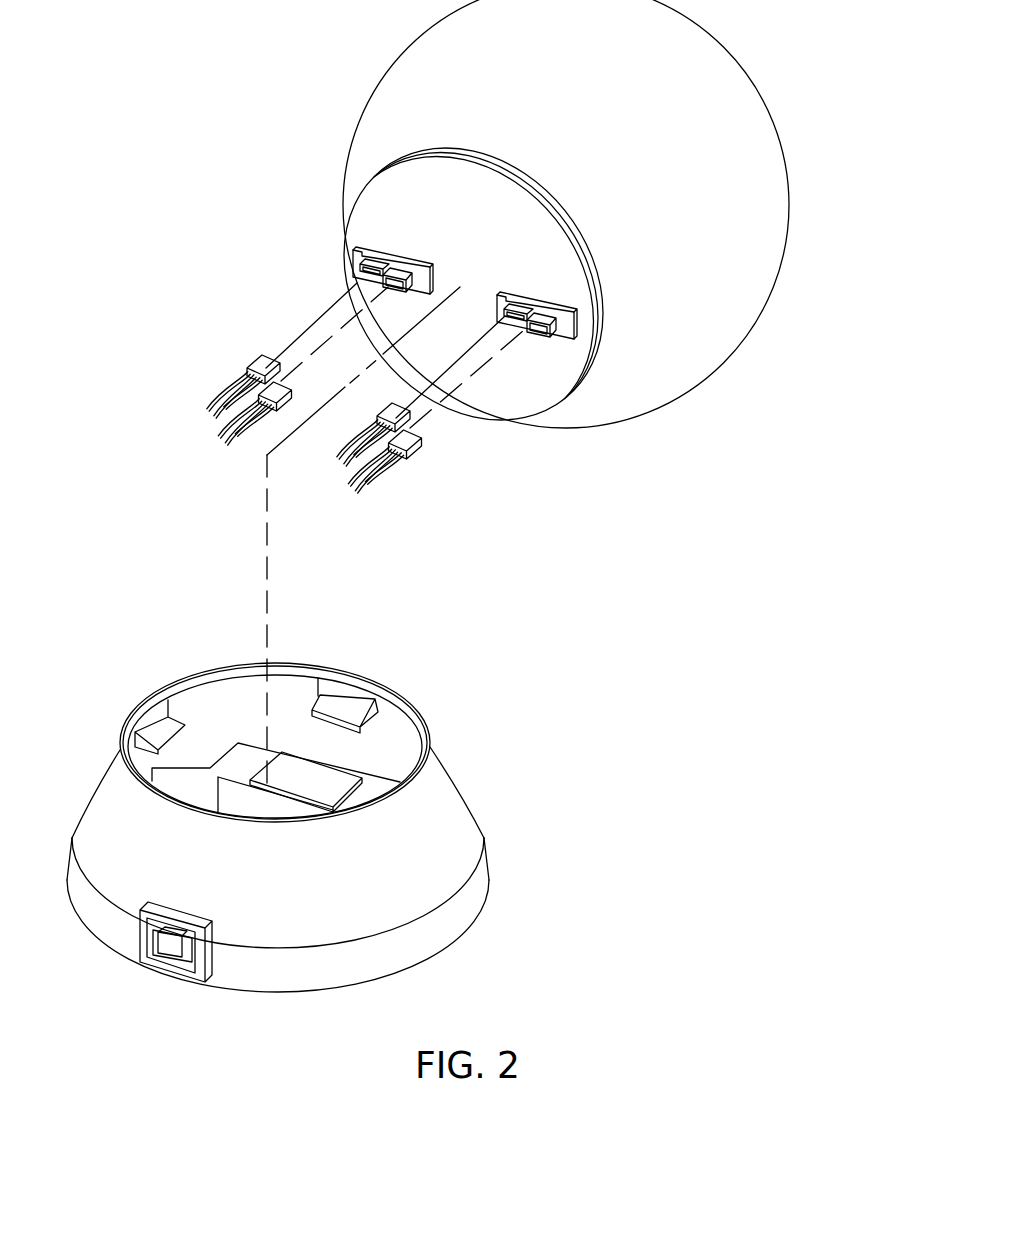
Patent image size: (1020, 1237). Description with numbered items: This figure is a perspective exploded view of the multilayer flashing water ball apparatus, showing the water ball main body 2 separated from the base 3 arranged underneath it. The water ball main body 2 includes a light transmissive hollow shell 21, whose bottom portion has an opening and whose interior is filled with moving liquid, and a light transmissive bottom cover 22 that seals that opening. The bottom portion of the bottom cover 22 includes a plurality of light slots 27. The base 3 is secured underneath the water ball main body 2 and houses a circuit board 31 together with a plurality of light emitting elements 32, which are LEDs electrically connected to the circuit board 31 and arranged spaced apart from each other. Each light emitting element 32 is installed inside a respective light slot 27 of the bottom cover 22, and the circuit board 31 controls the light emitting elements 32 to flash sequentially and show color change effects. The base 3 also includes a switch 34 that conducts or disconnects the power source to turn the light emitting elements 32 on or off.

The water ball main body 2 is at (283, 143).
The light transmissive hollow shell 21 is at (353, 137).
The light transmissive bottom cover 22 is at (363, 222).
The light slots 27 is at (362, 267).
The base 3 is at (288, 852).
The circuit board 31 is at (338, 779).
The light emitting elements 32 is at (252, 368).
The switch 34 is at (168, 945).